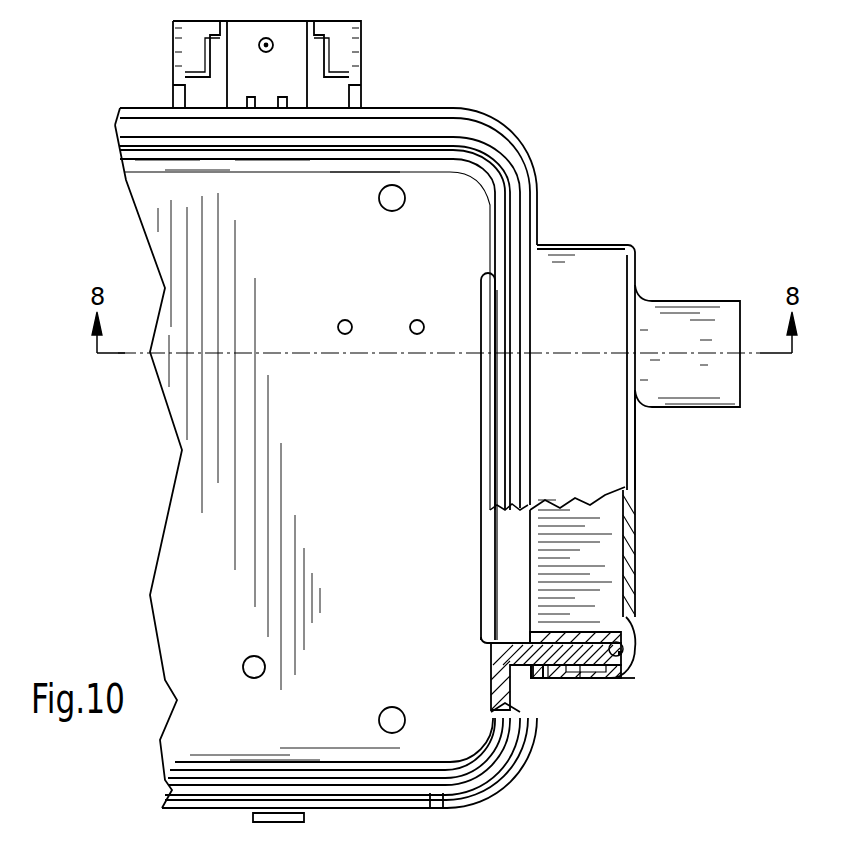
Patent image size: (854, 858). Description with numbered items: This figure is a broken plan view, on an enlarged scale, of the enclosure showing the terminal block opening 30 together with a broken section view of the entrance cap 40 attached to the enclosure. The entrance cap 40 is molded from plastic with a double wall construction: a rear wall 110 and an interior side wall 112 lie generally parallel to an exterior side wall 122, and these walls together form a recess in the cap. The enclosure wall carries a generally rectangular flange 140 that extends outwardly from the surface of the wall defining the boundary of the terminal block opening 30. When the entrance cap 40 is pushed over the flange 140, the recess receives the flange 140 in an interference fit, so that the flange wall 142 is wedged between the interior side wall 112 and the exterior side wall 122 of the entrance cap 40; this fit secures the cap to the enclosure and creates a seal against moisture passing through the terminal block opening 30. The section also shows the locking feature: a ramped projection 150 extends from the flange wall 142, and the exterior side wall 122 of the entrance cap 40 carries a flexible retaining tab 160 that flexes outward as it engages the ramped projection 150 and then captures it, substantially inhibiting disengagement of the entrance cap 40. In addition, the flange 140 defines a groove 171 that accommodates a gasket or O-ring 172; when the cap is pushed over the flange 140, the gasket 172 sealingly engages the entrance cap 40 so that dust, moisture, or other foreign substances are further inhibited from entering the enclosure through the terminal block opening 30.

The terminal block opening 30 is at (505, 650).
The entrance cap 40 is at (602, 290).
The rear wall 110 is at (625, 570).
The interior side wall 112 is at (620, 630).
The exterior side wall 122 is at (588, 679).
The flange 140 is at (565, 645).
The flange wall 142 is at (624, 676).
The ramped projection 150 is at (552, 680).
The retaining tab 160 is at (538, 680).
The groove 171 is at (590, 641).
The gasket 172 is at (622, 657).